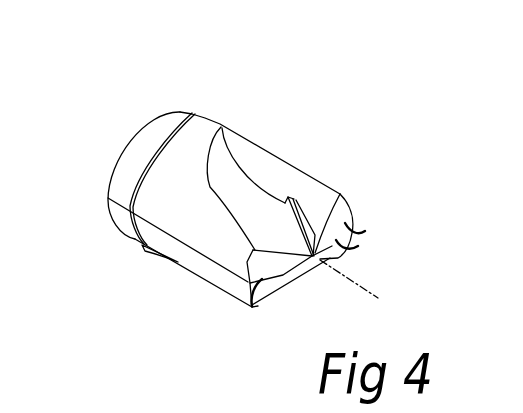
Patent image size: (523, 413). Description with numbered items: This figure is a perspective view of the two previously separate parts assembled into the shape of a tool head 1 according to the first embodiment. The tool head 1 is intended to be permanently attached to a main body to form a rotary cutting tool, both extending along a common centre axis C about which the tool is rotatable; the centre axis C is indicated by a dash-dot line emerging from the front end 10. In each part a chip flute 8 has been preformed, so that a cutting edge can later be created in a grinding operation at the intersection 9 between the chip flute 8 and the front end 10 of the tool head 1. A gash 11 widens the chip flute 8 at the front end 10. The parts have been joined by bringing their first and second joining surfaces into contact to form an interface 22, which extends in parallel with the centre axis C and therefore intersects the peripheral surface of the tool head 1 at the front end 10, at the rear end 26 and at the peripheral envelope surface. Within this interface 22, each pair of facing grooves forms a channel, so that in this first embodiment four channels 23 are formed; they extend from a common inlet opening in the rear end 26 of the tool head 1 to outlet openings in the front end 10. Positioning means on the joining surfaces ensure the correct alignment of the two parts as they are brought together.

The tool head 1 is at (260, 114).
The chip flute 8 is at (277, 178).
The intersection 9 is at (336, 214).
The front end 10 is at (323, 260).
The gash 11 is at (255, 218).
The interface 22 is at (256, 307).
The channels 23 is at (285, 272).
The rear end 26 is at (132, 134).
The centre axis C is at (358, 288).